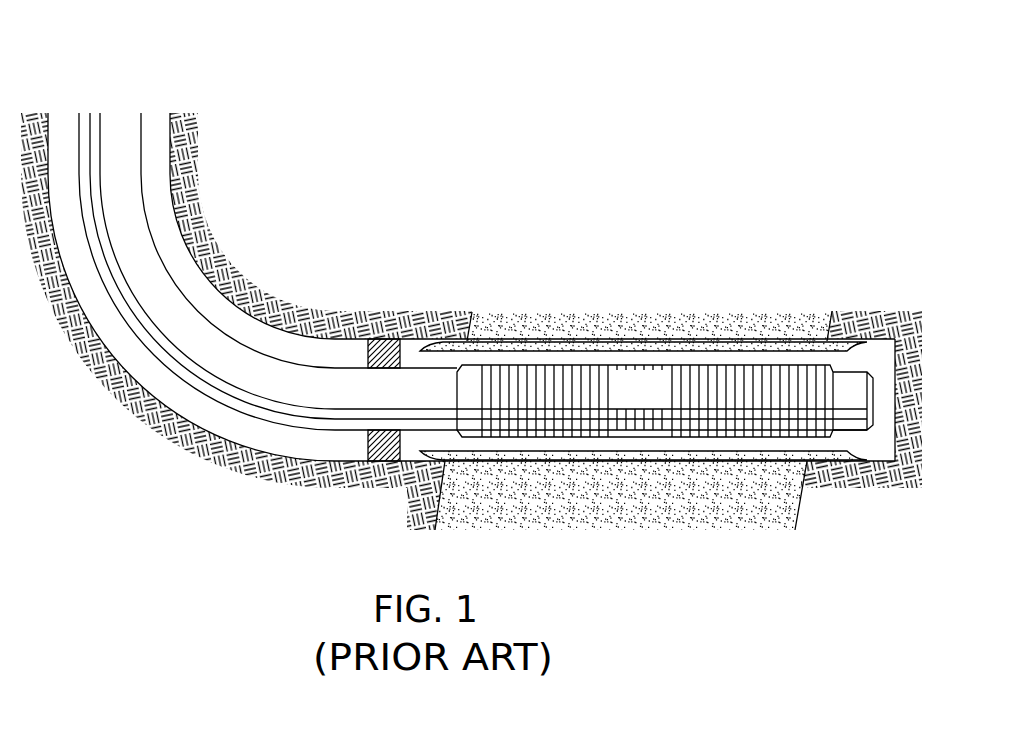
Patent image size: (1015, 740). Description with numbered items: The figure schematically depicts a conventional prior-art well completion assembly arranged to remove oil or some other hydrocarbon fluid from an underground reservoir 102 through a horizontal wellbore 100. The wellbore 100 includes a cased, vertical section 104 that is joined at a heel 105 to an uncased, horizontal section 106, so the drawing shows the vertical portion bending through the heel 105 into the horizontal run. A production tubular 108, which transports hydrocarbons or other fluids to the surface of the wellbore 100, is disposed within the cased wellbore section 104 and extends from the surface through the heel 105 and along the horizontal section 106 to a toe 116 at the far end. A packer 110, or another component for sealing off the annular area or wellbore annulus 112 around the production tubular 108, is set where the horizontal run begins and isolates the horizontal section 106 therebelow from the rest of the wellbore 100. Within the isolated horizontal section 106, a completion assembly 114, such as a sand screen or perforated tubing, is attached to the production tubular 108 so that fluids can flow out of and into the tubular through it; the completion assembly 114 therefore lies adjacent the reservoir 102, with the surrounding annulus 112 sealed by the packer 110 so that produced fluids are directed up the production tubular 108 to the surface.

The wellbore 100 is at (322, 155).
The underground reservoir 102 is at (660, 509).
The cased vertical section 104 is at (168, 113).
The heel 105 is at (183, 455).
The uncased horizontal section 106 is at (415, 356).
The production tubular 108 is at (145, 267).
The packer 110 is at (383, 462).
The wellbore annulus 112 is at (560, 357).
The completion assembly 114 is at (660, 405).
The toe 116 is at (940, 345).